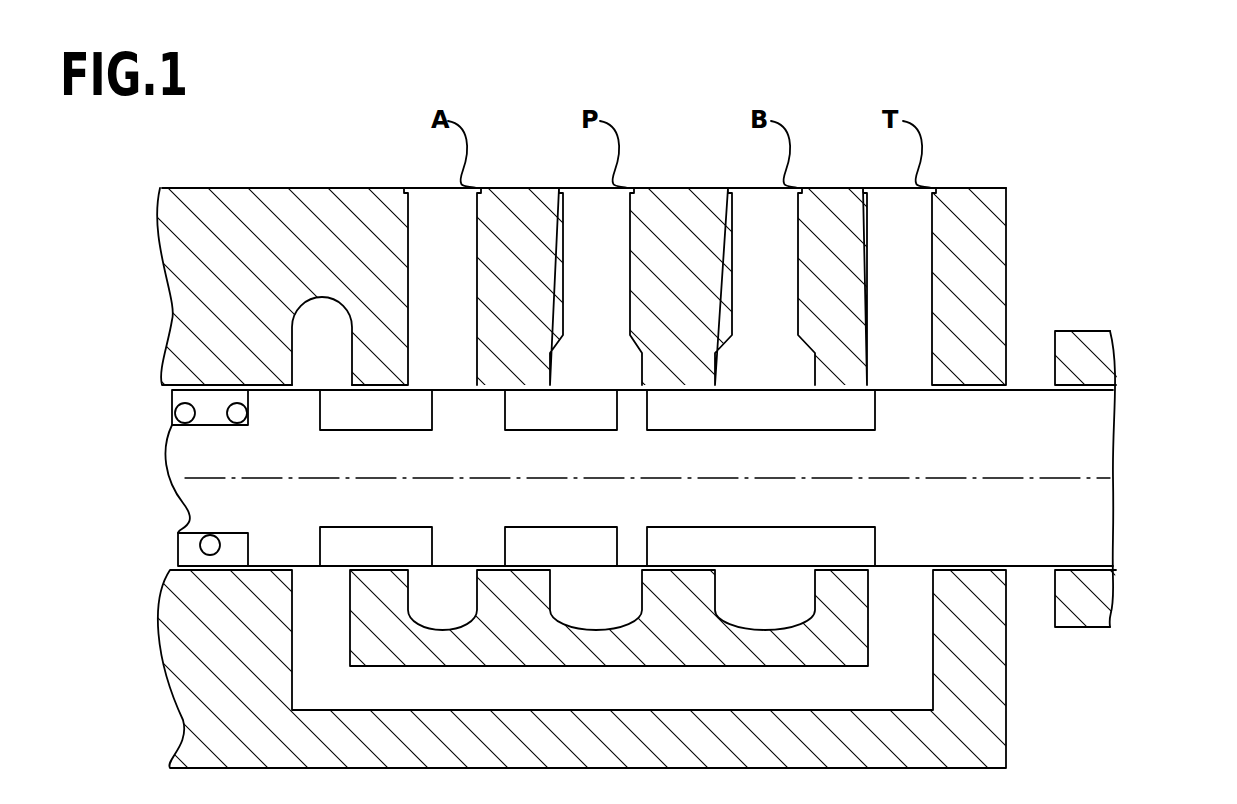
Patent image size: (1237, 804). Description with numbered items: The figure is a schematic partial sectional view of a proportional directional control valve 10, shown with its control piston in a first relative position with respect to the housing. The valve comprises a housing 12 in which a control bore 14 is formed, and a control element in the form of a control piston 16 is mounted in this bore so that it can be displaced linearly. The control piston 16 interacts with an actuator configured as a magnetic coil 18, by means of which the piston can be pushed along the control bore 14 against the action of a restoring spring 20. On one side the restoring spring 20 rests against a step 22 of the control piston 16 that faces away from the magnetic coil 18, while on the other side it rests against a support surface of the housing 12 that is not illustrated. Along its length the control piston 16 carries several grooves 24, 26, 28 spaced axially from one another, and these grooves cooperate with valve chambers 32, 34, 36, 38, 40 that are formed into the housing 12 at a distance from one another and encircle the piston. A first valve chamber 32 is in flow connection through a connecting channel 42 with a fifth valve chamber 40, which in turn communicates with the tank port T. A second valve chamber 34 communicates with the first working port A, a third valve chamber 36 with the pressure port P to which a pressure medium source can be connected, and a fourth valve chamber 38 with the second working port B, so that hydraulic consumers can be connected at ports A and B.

The proportional directional control valve 10 is at (653, 117).
The housing 12 is at (1025, 277).
The control bore 14 is at (192, 572).
The control piston 16 is at (205, 514).
The magnetic coil 18 is at (1100, 357).
The restoring spring 20 is at (183, 413).
The step 22 is at (245, 388).
The groove 24 is at (343, 430).
The groove 26 is at (527, 430).
The groove 28 is at (725, 430).
The first valve chamber 32 is at (422, 383).
The second valve chamber 34 is at (458, 343).
The third valve chamber 36 is at (612, 343).
The fourth valve chamber 38 is at (780, 343).
The fifth valve chamber 40 is at (805, 378).
The connecting channel 42 is at (615, 703).